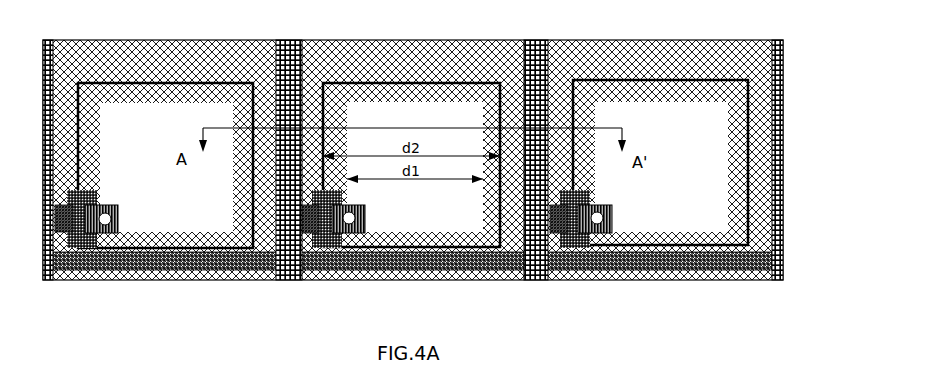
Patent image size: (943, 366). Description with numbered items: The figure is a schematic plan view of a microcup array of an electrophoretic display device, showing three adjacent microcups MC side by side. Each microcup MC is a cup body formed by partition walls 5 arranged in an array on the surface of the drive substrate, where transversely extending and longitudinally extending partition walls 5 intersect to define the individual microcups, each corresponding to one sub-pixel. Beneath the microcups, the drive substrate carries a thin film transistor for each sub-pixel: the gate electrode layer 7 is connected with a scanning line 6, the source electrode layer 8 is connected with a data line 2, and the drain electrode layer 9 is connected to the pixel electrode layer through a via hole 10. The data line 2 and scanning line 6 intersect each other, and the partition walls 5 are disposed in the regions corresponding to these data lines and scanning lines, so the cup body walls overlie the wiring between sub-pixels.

The microcup MC is at (168, 64).
The data line 2 is at (777, 128).
The partition wall 5 is at (758, 92).
The scanning line 6 is at (773, 245).
The gate electrode layer 7 is at (333, 280).
The source electrode layer 8 is at (575, 280).
The drain electrode layer 9 is at (375, 280).
The via hole 10 is at (620, 280).